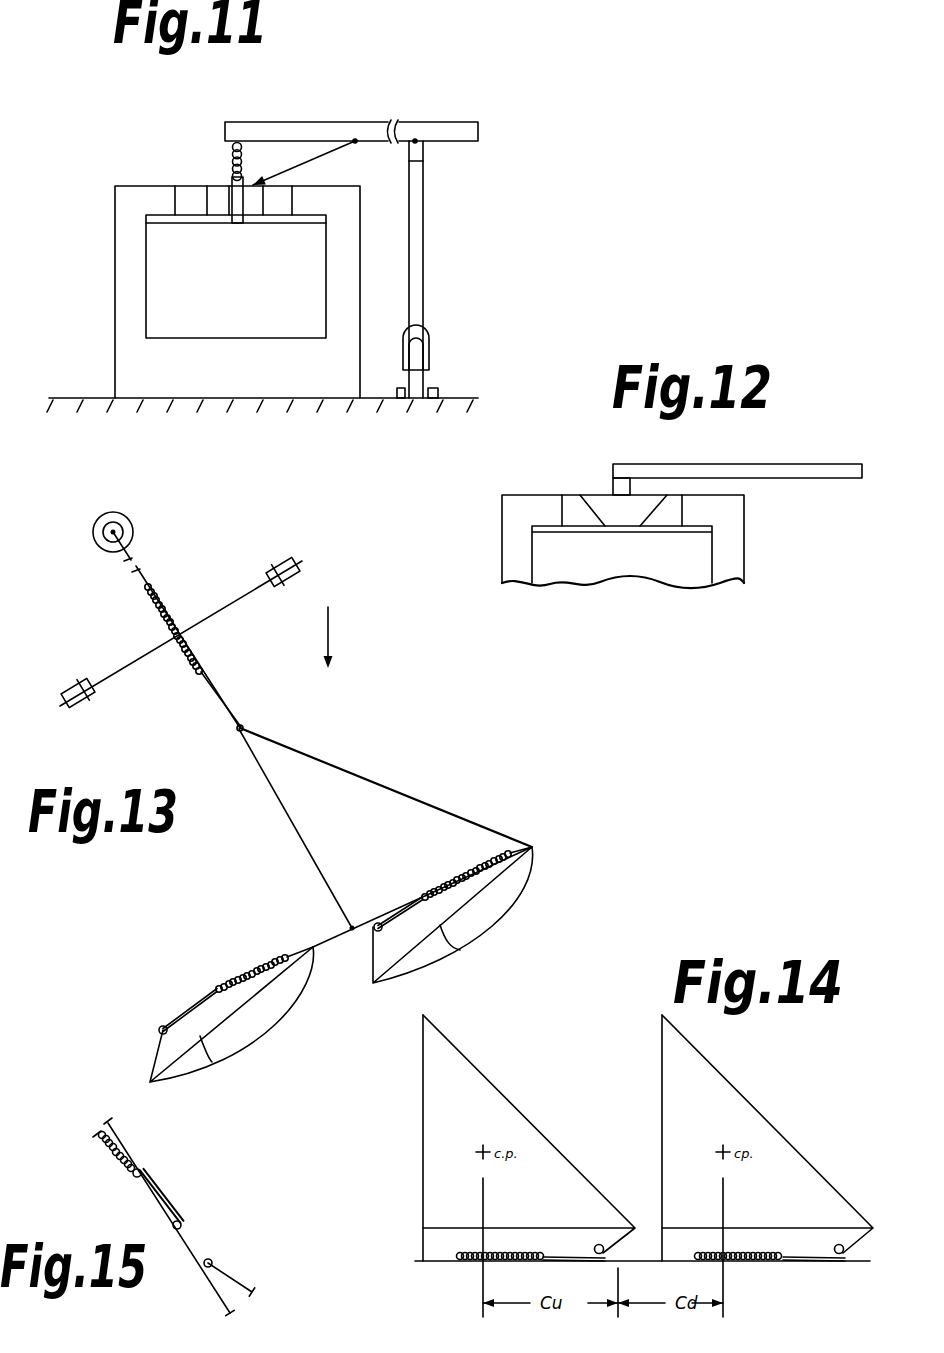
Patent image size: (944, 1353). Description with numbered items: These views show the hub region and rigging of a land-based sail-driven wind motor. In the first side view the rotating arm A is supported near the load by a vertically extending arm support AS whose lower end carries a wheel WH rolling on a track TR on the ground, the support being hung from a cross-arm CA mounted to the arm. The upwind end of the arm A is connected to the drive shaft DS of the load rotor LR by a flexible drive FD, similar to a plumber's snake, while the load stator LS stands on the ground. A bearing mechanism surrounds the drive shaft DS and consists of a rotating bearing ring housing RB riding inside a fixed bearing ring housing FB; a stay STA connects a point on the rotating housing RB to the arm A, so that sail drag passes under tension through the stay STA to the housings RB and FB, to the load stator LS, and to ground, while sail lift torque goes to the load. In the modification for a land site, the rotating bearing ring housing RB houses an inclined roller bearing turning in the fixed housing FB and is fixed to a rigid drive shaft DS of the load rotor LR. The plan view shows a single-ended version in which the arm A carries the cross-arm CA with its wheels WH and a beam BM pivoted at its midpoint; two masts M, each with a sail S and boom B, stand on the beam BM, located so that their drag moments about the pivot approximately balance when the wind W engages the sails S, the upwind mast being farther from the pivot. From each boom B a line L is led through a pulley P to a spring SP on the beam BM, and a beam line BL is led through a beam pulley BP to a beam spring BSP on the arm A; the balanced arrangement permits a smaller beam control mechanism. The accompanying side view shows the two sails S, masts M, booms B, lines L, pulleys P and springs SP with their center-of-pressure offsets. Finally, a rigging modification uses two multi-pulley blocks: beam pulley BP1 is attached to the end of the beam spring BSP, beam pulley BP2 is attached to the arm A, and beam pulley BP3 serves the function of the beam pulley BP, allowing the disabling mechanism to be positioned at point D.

In FIG. 11, the arm A is at (338, 122).
In FIG. 12, the arm A is at (703, 464).
In FIG. 13, the arm A is at (135, 572).
In FIG. 15, the arm A is at (135, 1177).
In FIG. 11, the rotating bearing ring housing RB is at (221, 186).
In FIG. 12, the rotating bearing ring housing RB is at (592, 495).
In FIG. 11, the fixed bearing ring housing FB is at (188, 186).
In FIG. 12, the fixed bearing ring housing FB is at (565, 495).
In FIG. 11, the flexible drive FD is at (304, 163).
In FIG. 11, the stay STA is at (322, 167).
In FIG. 11, the cross-arm CA is at (423, 158).
In FIG. 13, the cross-arm CA is at (233, 603).
In FIG. 11, the arm support AS is at (423, 218).
In FIG. 11, the drive shaft DS is at (243, 205).
In FIG. 12, the drive shaft DS is at (612, 485).
In FIG. 13, the drive shaft DS is at (121, 515).
In FIG. 11, the load rotor LR is at (146, 260).
In FIG. 12, the load rotor LR is at (712, 547).
In FIG. 13, the load rotor LR is at (125, 525).
In FIG. 11, the load stator LS is at (115, 298).
In FIG. 12, the load stator LS is at (744, 570).
In FIG. 13, the load stator LS is at (130, 543).
In FIG. 11, the wheel WH is at (425, 385).
In FIG. 13, the wheel WH is at (298, 563).
In FIG. 11, the track TR is at (440, 393).
In FIG. 13, the beam spring BSP is at (162, 605).
In FIG. 15, the beam spring BSP is at (125, 1155).
In FIG. 13, the point D is at (219, 685).
In FIG. 15, the point D is at (203, 1234).
In FIG. 13, the beam pulley BP is at (243, 725).
In FIG. 13, the beam line BL is at (317, 762).
In FIG. 13, the beam BM is at (330, 933).
In FIG. 13, the mast M is at (532, 847).
In FIG. 14, the mast M is at (423, 1133).
In FIG. 13, the sail S is at (523, 883).
In FIG. 14, the sail S is at (507, 1093).
In FIG. 13, the spring SP is at (448, 880).
In FIG. 14, the spring SP is at (508, 1257).
In FIG. 13, the pulley P is at (378, 920).
In FIG. 14, the pulley P is at (606, 1244).
In FIG. 13, the line L is at (152, 1057).
In FIG. 14, the line L is at (565, 1257).
In FIG. 13, the boom B is at (458, 950).
In FIG. 14, the boom B is at (493, 1228).
In FIG. 13, the wind W is at (340, 637).
In FIG. 15, the beam pulley BP1 is at (141, 1173).
In FIG. 15, the beam pulley BP2 is at (181, 1223).
In FIG. 15, the beam pulley BP3 is at (212, 1262).